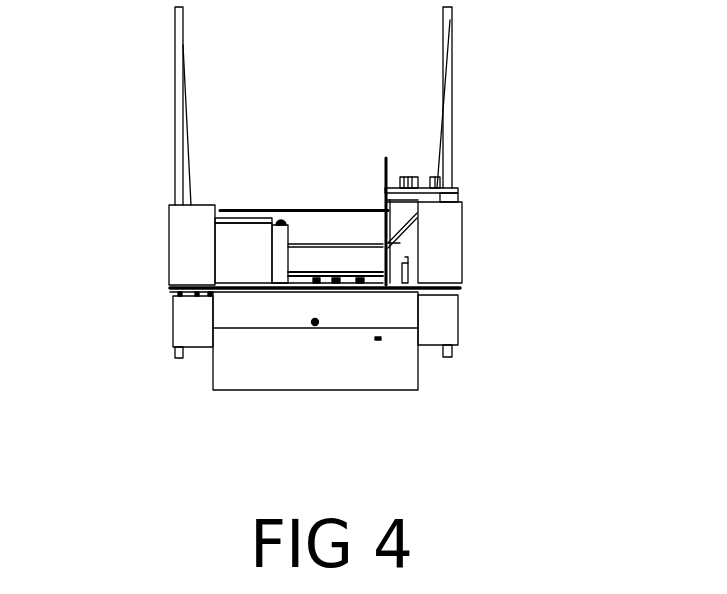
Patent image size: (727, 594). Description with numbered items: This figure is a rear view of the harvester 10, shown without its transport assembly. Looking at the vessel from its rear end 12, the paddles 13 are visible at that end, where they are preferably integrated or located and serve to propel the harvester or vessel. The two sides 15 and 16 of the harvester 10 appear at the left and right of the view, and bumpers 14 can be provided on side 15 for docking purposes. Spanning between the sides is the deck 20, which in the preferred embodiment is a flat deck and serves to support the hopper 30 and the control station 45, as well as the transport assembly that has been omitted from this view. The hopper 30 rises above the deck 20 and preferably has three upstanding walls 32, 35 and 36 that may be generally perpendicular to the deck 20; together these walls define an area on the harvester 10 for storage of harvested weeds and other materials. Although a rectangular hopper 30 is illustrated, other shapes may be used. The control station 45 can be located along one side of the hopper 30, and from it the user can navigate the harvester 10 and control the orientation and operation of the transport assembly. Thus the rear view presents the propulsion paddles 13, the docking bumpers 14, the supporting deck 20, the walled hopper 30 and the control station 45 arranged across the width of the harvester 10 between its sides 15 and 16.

The harvester 10 is at (473, 142).
The end 12 is at (352, 312).
The paddles 13 is at (343, 390).
The bumpers 14 is at (460, 318).
The side 15 is at (460, 345).
The side 16 is at (173, 315).
The deck 20 is at (425, 284).
The hopper 30 is at (286, 210).
The upstanding wall 32 is at (314, 228).
The upstanding wall 35 is at (378, 218).
The upstanding wall 36 is at (232, 211).
The control station 45 is at (450, 203).